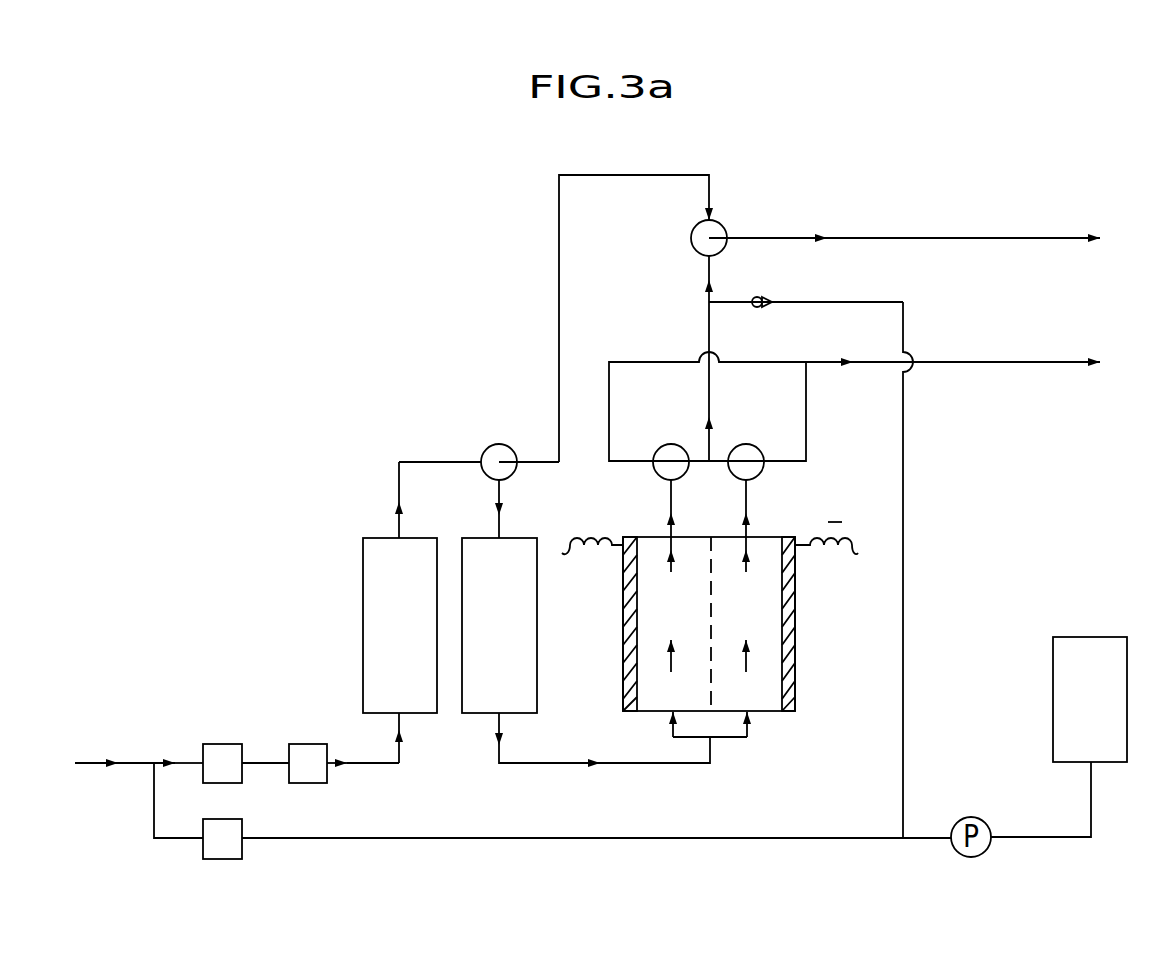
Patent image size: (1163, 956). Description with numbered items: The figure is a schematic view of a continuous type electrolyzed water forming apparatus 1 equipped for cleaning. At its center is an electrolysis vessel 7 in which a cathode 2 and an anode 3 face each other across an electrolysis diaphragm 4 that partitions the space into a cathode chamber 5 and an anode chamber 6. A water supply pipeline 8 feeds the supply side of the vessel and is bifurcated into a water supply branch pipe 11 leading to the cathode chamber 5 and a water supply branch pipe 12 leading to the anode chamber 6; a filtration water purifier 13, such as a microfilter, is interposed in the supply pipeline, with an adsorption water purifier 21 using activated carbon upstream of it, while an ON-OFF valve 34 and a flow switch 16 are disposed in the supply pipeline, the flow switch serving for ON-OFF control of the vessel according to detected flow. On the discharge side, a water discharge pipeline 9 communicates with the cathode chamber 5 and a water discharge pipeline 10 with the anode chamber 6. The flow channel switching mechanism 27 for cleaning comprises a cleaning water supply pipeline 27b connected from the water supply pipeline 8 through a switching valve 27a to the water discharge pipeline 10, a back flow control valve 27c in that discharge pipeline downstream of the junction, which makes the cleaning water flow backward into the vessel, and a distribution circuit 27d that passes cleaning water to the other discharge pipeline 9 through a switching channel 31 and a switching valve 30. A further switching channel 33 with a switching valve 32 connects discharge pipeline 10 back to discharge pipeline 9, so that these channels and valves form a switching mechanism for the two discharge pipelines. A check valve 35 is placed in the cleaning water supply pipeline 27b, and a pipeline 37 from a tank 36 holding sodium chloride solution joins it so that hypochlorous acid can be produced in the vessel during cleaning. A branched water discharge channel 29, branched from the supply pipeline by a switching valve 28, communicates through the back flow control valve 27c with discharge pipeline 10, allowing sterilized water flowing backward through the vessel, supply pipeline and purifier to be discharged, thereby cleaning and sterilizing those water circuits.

The electrolyzed water forming apparatus 1 is at (357, 372).
The cathode 2 is at (795, 580).
The anode 3 is at (623, 592).
The electrolysis diaphragm 4 is at (710, 675).
The cathode chamber 5 is at (755, 622).
The anode chamber 6 is at (680, 622).
The electrolysis vessel 7 is at (803, 672).
The water supply pipeline 8 is at (80, 765).
The water discharge pipeline 9 is at (963, 362).
The water discharge pipeline 10 is at (907, 238).
The water supply branch pipe 11 is at (746, 739).
The water supply branch pipe 12 is at (687, 739).
The filtration water purifier 13 is at (537, 700).
The flow switch 16 is at (308, 748).
The adsorption water purifier 21 is at (365, 567).
The flow channel switching mechanism for cleaning 27 is at (910, 672).
The switching valve 27a is at (242, 850).
The cleaning water supply pipeline 27b is at (905, 462).
The back flow control valve 27c is at (714, 222).
The distribution circuit 27d is at (776, 405).
The switching valve 28 is at (500, 444).
The branched water discharge channel 29 is at (559, 230).
The switching valve 30 is at (746, 444).
The switching channel 31 is at (713, 463).
The switching valve 32 is at (672, 444).
The switching channel 33 is at (609, 363).
The ON-OFF valve 34 is at (222, 748).
The check valve 35 is at (766, 300).
The tank 36 is at (1053, 712).
The pipeline 37 is at (1020, 837).